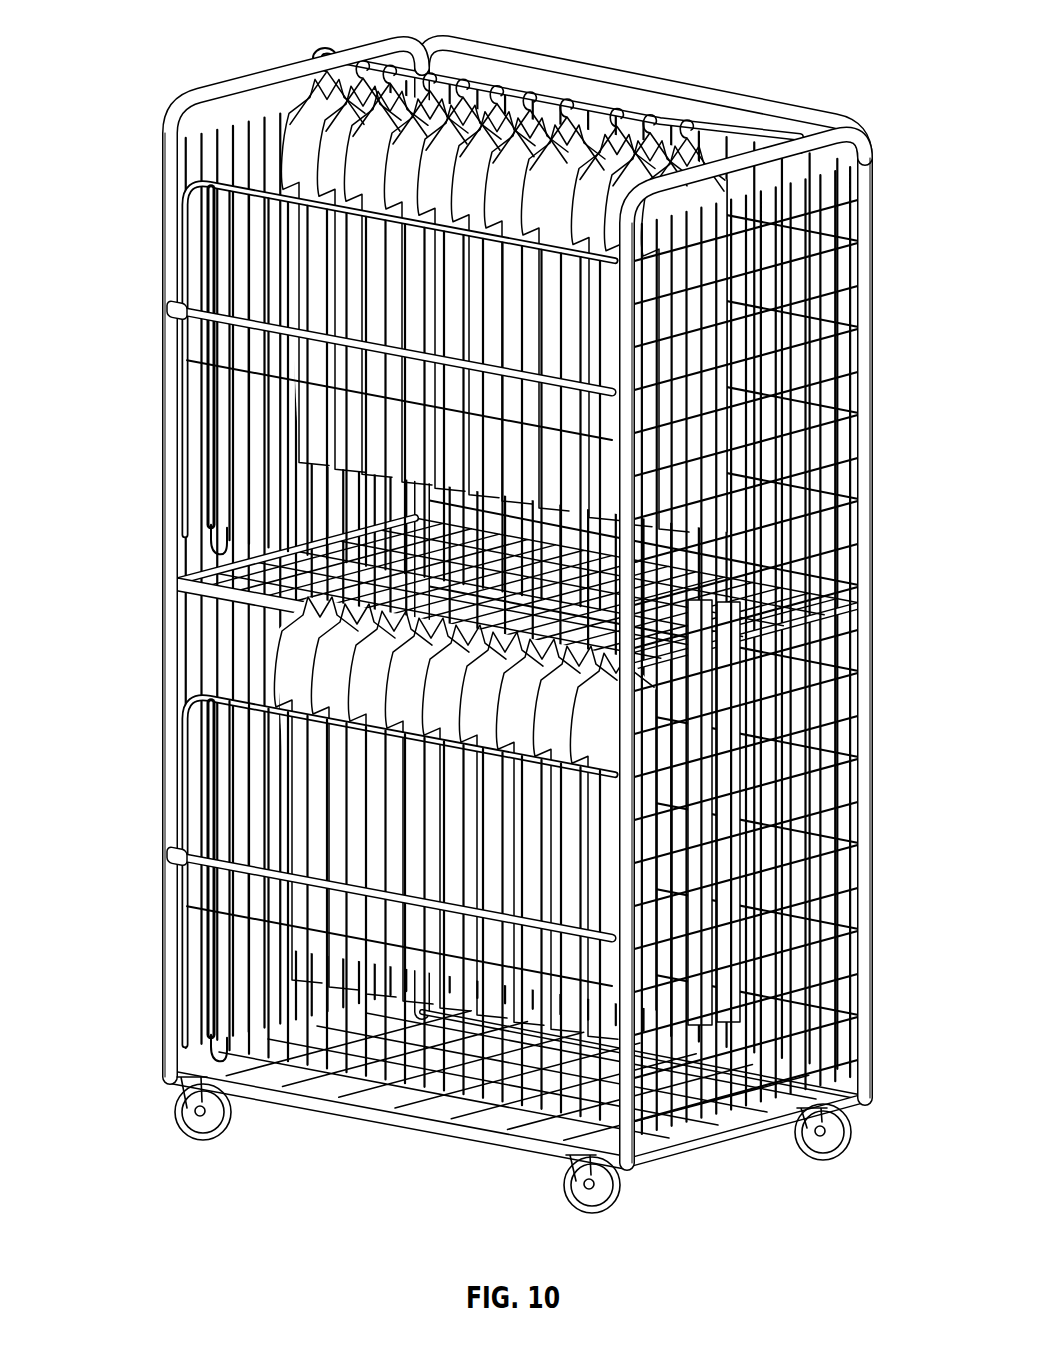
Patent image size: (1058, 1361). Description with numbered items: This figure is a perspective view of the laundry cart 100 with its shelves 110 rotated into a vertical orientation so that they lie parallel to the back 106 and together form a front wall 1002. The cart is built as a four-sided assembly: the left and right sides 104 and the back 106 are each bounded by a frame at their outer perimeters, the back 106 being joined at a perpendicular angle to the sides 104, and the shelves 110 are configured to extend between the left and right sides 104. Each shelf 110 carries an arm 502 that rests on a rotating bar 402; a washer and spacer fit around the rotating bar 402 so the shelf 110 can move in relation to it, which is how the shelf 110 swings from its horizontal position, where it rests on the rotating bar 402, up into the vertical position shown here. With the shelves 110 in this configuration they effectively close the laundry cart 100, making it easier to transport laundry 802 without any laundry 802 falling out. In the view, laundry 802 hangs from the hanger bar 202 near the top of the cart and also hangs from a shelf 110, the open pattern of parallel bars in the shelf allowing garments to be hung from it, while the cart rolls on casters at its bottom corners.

The laundry cart 100 is at (505, 609).
The left and right sides 104 is at (190, 94).
The back 106 is at (866, 320).
The shelf 110 is at (783, 582).
The hanger bar 202 is at (535, 87).
The rotating bar 402 is at (389, 623).
The arm 502 is at (332, 655).
The laundry 802 is at (615, 268).
The front wall 1002 is at (399, 652).